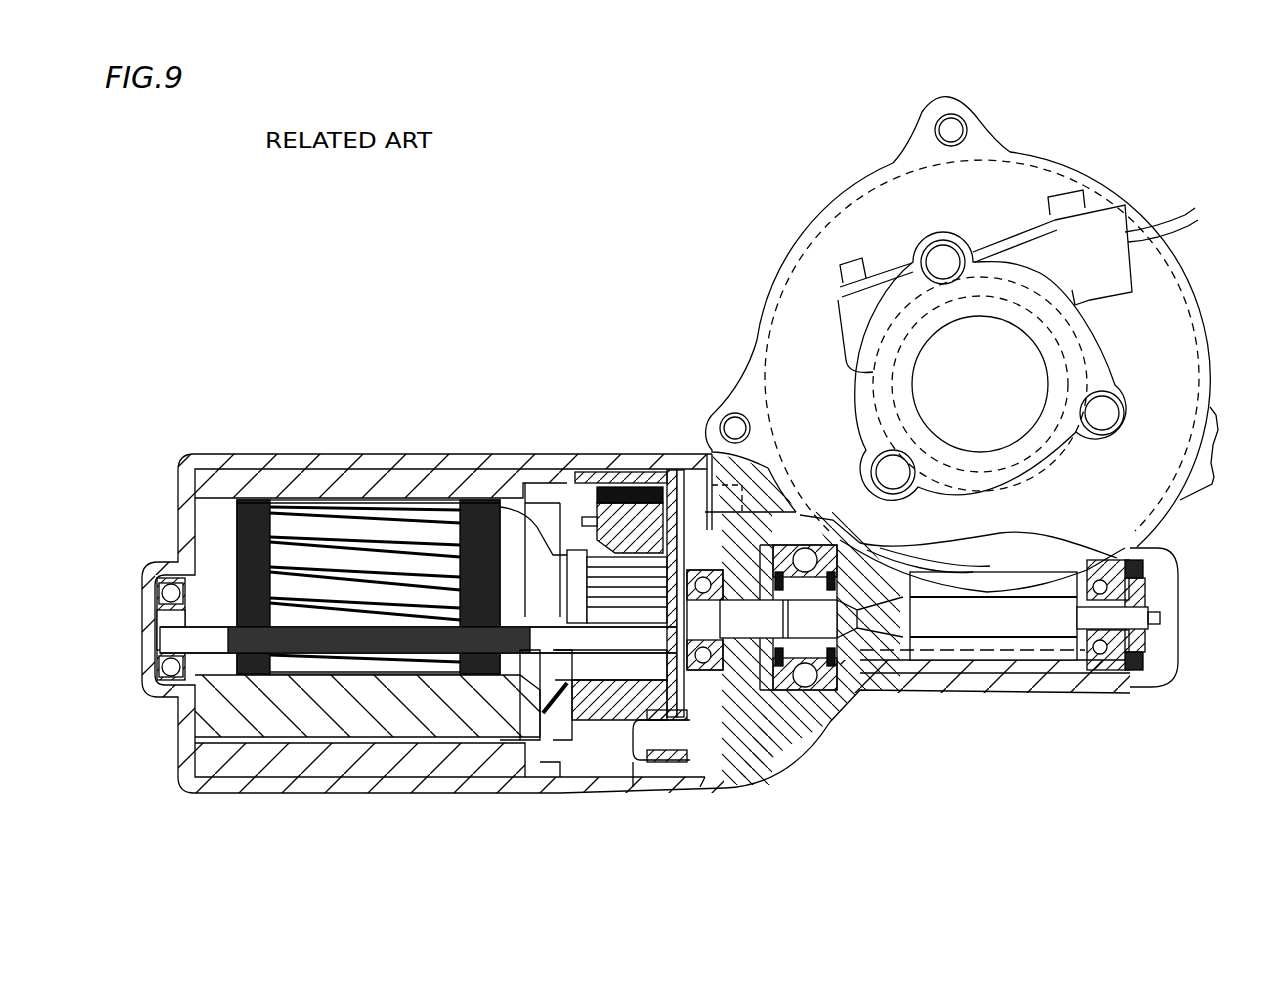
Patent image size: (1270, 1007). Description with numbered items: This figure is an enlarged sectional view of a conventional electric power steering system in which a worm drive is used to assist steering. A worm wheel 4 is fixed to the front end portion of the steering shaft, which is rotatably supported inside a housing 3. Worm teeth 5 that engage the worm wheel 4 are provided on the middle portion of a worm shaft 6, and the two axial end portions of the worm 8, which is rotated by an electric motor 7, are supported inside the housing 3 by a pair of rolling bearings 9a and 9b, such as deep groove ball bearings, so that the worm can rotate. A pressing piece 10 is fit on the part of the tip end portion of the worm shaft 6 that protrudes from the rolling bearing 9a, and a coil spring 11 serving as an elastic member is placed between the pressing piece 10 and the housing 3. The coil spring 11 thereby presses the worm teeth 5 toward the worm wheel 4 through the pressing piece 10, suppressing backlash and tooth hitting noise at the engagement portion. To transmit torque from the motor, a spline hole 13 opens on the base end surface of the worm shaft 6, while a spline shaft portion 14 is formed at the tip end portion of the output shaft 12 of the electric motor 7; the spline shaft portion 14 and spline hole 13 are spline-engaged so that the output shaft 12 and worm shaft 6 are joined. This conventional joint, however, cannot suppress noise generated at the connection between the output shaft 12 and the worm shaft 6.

The housing 3 is at (1005, 190).
The worm wheel 4 is at (1012, 553).
The worm teeth 5 is at (990, 642).
The worm shaft 6 is at (950, 623).
The electric motor 7 is at (398, 483).
The worm 8 is at (884, 624).
The rolling bearing 9a is at (1103, 668).
The rolling bearing 9b is at (805, 682).
The pressing piece 10 is at (1133, 645).
The coil spring 11 is at (1145, 562).
The output shaft 12 is at (740, 612).
The spline hole 13 is at (693, 748).
The spline shaft portion 14 is at (797, 693).